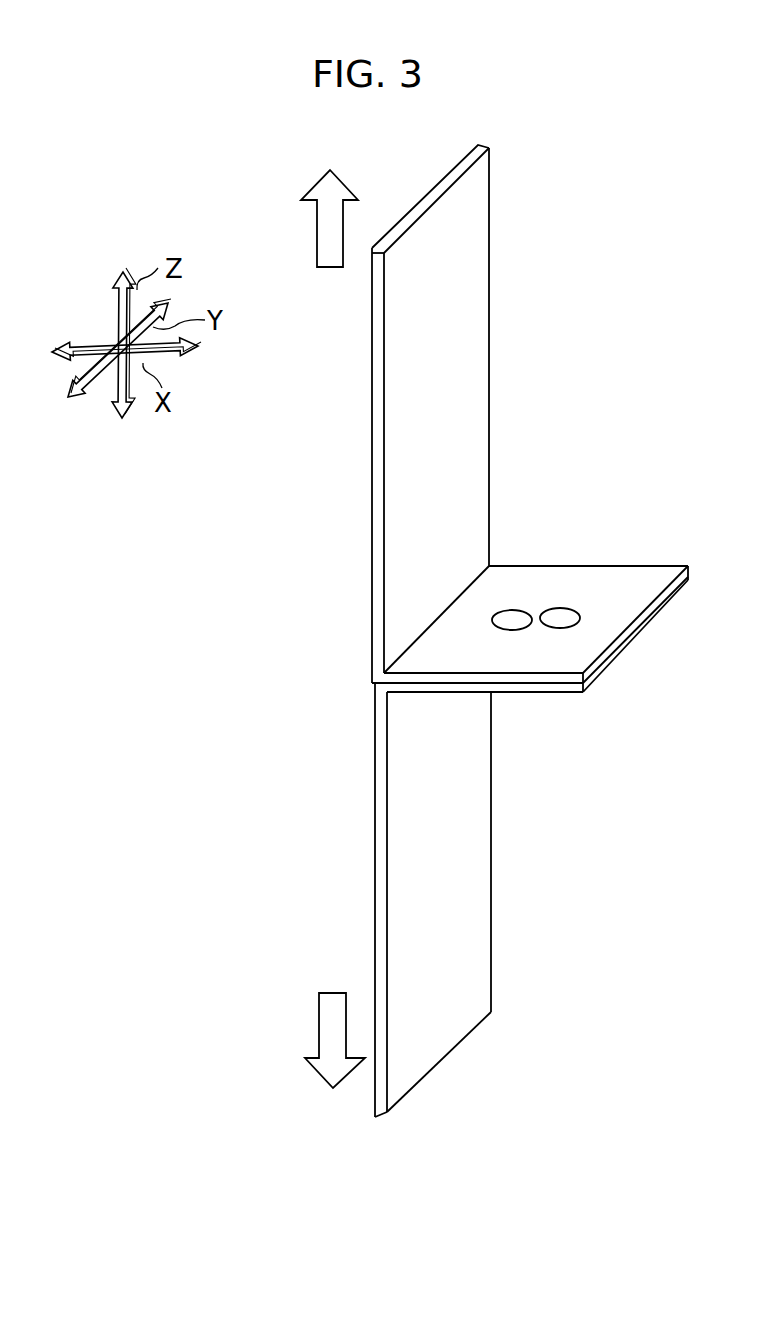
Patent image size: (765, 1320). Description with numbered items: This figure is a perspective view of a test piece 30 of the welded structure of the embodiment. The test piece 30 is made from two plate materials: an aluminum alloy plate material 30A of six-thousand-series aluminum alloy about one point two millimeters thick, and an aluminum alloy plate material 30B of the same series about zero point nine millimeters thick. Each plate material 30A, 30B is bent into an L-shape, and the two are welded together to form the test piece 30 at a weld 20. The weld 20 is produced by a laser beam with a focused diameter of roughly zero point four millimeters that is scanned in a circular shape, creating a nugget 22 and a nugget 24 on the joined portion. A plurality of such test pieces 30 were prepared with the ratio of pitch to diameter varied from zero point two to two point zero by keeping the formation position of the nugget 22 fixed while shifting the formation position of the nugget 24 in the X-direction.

The test piece 30 is at (530, 631).
The aluminum alloy plate material 30A is at (468, 322).
The aluminum alloy plate material 30B is at (472, 872).
The weld 20 is at (562, 563).
The nugget 22 is at (517, 608).
The nugget 24 is at (568, 610).